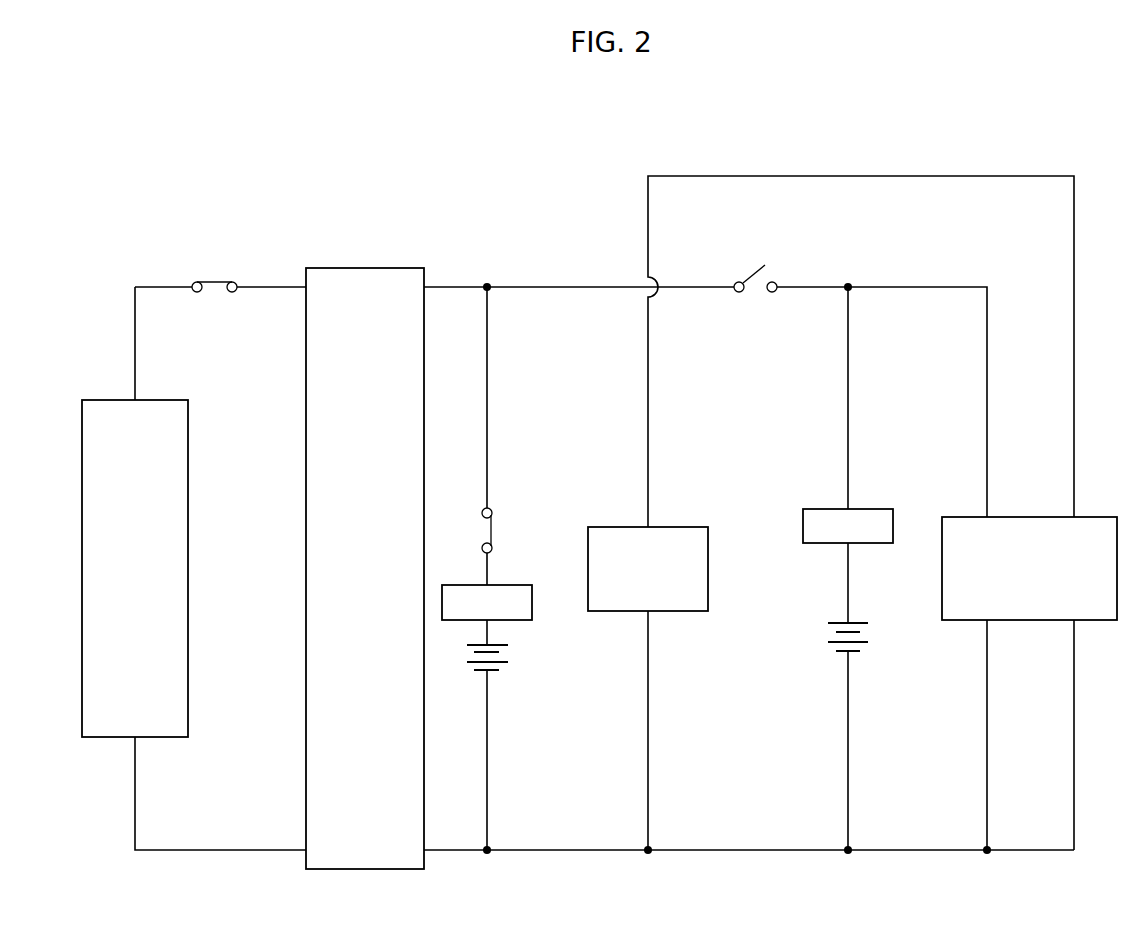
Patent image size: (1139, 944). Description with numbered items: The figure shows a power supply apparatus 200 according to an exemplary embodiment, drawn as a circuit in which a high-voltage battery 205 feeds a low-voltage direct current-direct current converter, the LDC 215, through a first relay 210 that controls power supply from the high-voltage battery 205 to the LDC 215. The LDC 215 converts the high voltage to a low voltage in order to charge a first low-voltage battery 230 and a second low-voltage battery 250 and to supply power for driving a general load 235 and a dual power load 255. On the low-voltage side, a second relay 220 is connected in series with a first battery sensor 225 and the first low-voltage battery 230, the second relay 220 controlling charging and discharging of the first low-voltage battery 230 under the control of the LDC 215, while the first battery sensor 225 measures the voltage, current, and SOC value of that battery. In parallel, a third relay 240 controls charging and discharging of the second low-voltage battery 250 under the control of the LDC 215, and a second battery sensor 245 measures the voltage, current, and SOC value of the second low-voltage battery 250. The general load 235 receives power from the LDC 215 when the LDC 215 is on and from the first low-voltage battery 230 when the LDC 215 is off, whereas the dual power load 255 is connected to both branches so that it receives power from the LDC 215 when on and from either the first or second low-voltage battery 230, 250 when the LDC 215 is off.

The power supply apparatus 200 is at (483, 179).
The high-voltage battery 205 is at (105, 400).
The first relay 210 is at (215, 282).
The low-voltage direct current-direct current converter (LDC) 215 is at (362, 268).
The second relay 220 is at (494, 523).
The first battery sensor 225 is at (533, 613).
The first low-voltage battery 230 is at (490, 673).
The general load 235 is at (680, 527).
The third relay 240 is at (752, 270).
The second battery sensor 245 is at (870, 508).
The second low-voltage battery 250 is at (855, 652).
The dual power load 255 is at (1025, 517).